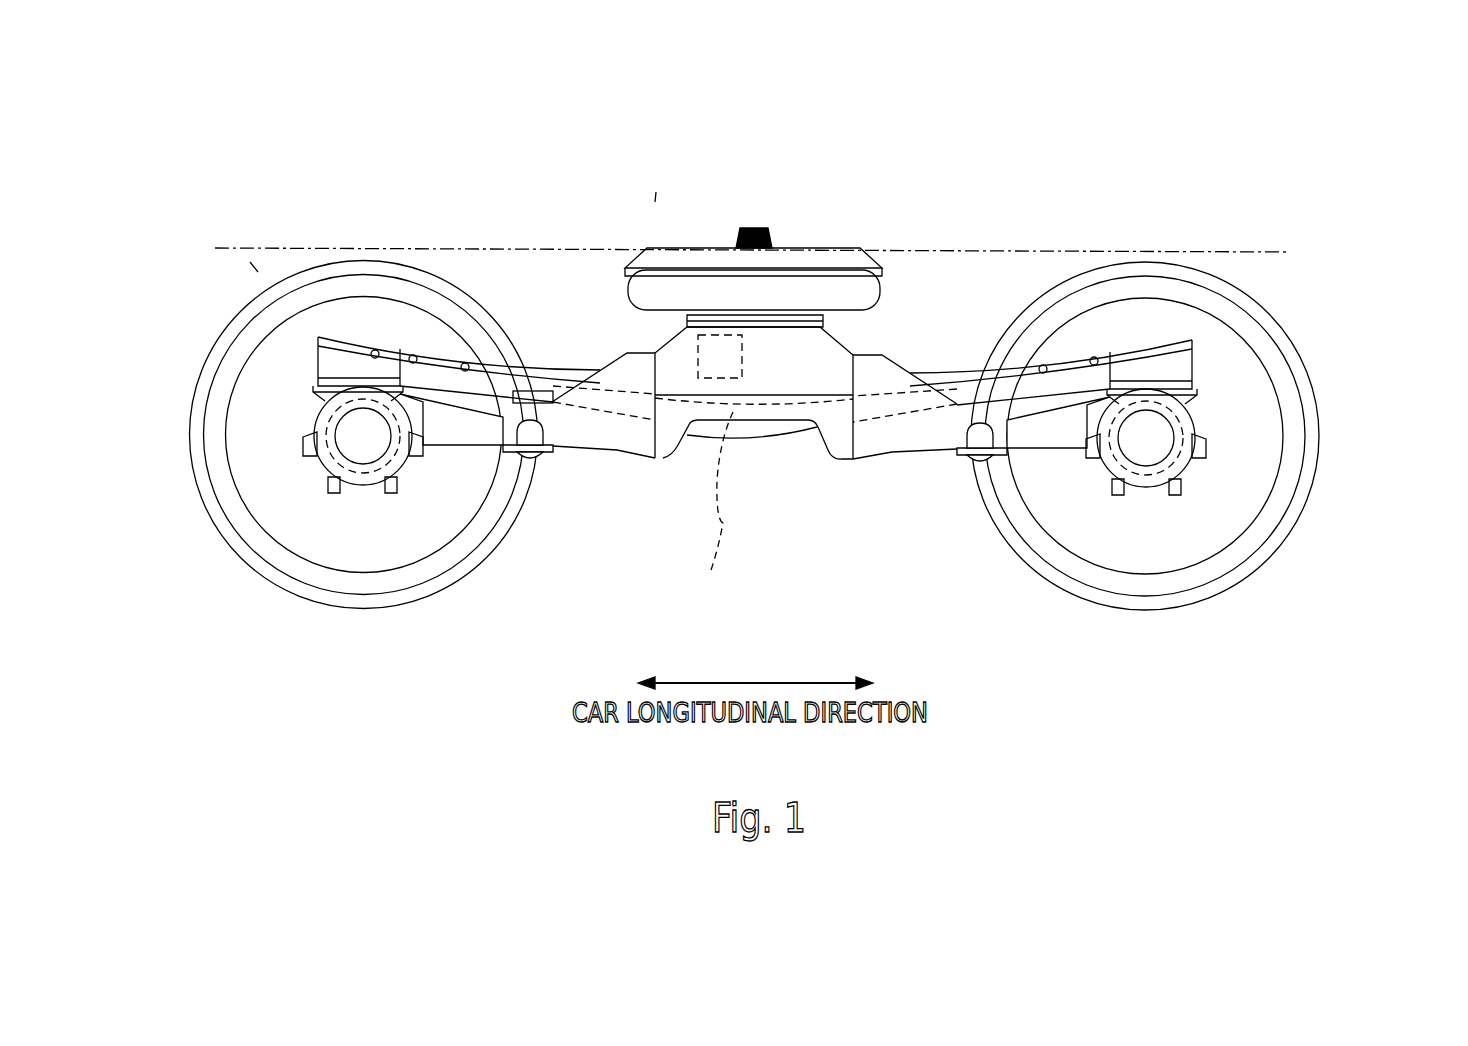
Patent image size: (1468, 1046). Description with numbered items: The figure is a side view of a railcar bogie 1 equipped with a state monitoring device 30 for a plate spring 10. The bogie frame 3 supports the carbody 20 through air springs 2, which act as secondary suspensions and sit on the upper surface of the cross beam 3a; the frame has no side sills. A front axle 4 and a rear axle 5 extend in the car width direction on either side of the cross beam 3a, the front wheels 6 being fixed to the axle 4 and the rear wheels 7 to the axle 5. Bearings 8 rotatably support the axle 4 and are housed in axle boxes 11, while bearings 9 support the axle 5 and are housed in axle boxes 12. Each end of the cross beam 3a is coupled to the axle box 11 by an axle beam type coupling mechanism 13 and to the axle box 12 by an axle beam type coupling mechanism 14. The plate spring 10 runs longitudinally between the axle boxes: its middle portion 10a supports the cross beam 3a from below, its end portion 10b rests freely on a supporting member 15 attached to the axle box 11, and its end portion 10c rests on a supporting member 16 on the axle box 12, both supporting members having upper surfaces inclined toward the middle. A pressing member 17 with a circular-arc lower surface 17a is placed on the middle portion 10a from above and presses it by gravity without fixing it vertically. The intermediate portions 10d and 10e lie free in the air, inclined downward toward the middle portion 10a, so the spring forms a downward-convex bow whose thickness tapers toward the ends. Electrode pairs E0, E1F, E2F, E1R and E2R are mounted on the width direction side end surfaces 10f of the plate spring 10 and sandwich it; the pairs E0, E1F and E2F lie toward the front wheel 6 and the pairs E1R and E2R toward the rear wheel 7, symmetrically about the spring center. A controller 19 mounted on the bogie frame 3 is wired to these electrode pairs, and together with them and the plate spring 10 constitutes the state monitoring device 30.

The railcar bogie 1 is at (258, 272).
The air spring 2 is at (838, 262).
The bogie frame 3 is at (860, 353).
The cross beam 3a is at (658, 350).
The axle 4 is at (313, 470).
The axle 5 is at (1197, 490).
The wheel 6 is at (235, 308).
The wheel 7 is at (1320, 410).
The bearing 8 is at (368, 490).
The bearing 9 is at (1151, 489).
The plate spring 10 is at (965, 368).
The longitudinal direction middle portion 10a is at (757, 440).
The longitudinal direction end portion 10b is at (358, 337).
The longitudinal direction end portion 10c is at (1145, 340).
The intermediate portion 10d is at (545, 385).
The intermediate portion 10e is at (1005, 362).
The width direction side end surface 10f is at (560, 387).
The axle box 11 is at (307, 447).
The axle box 12 is at (1204, 439).
The axle beam type coupling mechanism 13 is at (542, 460).
The axle beam type coupling mechanism 14 is at (954, 460).
The supporting member 15 is at (306, 378).
The supporting member 16 is at (1194, 346).
The pressing member 17 is at (770, 390).
The circular-arc lower surface 17a is at (713, 507).
The controller 19 is at (722, 333).
The carbody 20 is at (1262, 252).
The state monitoring device 30 is at (655, 202).
The electrode pair E0 is at (375, 350).
The electrode pair E1F is at (414, 355).
The electrode pair E2F is at (465, 363).
The electrode pair E1R is at (1095, 357).
The electrode pair E2R is at (1043, 365).